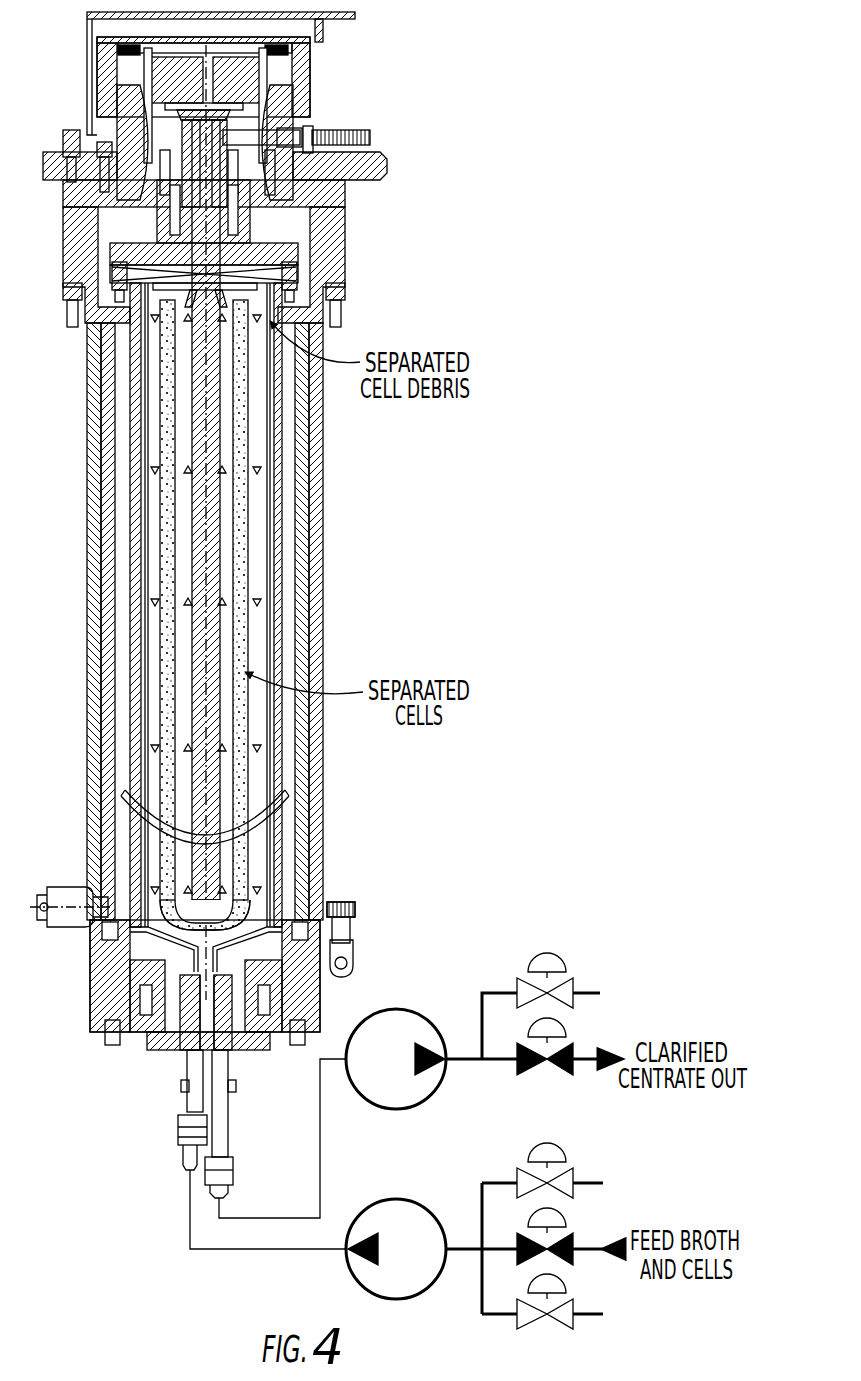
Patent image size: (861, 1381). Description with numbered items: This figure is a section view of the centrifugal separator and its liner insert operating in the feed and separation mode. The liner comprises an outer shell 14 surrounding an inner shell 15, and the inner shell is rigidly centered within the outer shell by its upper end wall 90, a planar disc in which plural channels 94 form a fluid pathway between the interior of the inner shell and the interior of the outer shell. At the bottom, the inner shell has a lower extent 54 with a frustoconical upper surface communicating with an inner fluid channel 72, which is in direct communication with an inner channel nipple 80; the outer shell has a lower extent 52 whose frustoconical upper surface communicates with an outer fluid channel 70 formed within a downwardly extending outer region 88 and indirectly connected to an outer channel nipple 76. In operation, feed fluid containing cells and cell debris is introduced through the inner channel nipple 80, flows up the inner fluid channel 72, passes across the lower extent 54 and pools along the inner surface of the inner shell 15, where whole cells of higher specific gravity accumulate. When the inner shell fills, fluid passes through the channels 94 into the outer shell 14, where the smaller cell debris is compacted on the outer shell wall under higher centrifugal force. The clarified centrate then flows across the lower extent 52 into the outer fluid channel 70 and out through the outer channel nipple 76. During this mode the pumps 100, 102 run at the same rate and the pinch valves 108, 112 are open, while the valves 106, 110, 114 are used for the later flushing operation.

The liner outer shell 14 is at (134, 417).
The liner inner shell 15 is at (156, 500).
The lower extent of the outer shell 52 is at (249, 930).
The lower extent of the inner shell 54 is at (237, 921).
The outer fluid channel 70 is at (280, 942).
The inner fluid channel 72 is at (205, 996).
The outer channel nipple 76 is at (228, 1084).
The inner channel nipple 80 is at (185, 1084).
The outer region 88 is at (222, 1044).
The upper end wall of the inner shell 90 is at (181, 304).
The channels 94 is at (166, 277).
The pump 100 is at (432, 1011).
The pump 102 is at (426, 1201).
The valve 106 is at (567, 953).
The pinch valve 108 is at (567, 1023).
The valve 110 is at (568, 1144).
The pinch valve 112 is at (568, 1212).
The valve 114 is at (568, 1278).